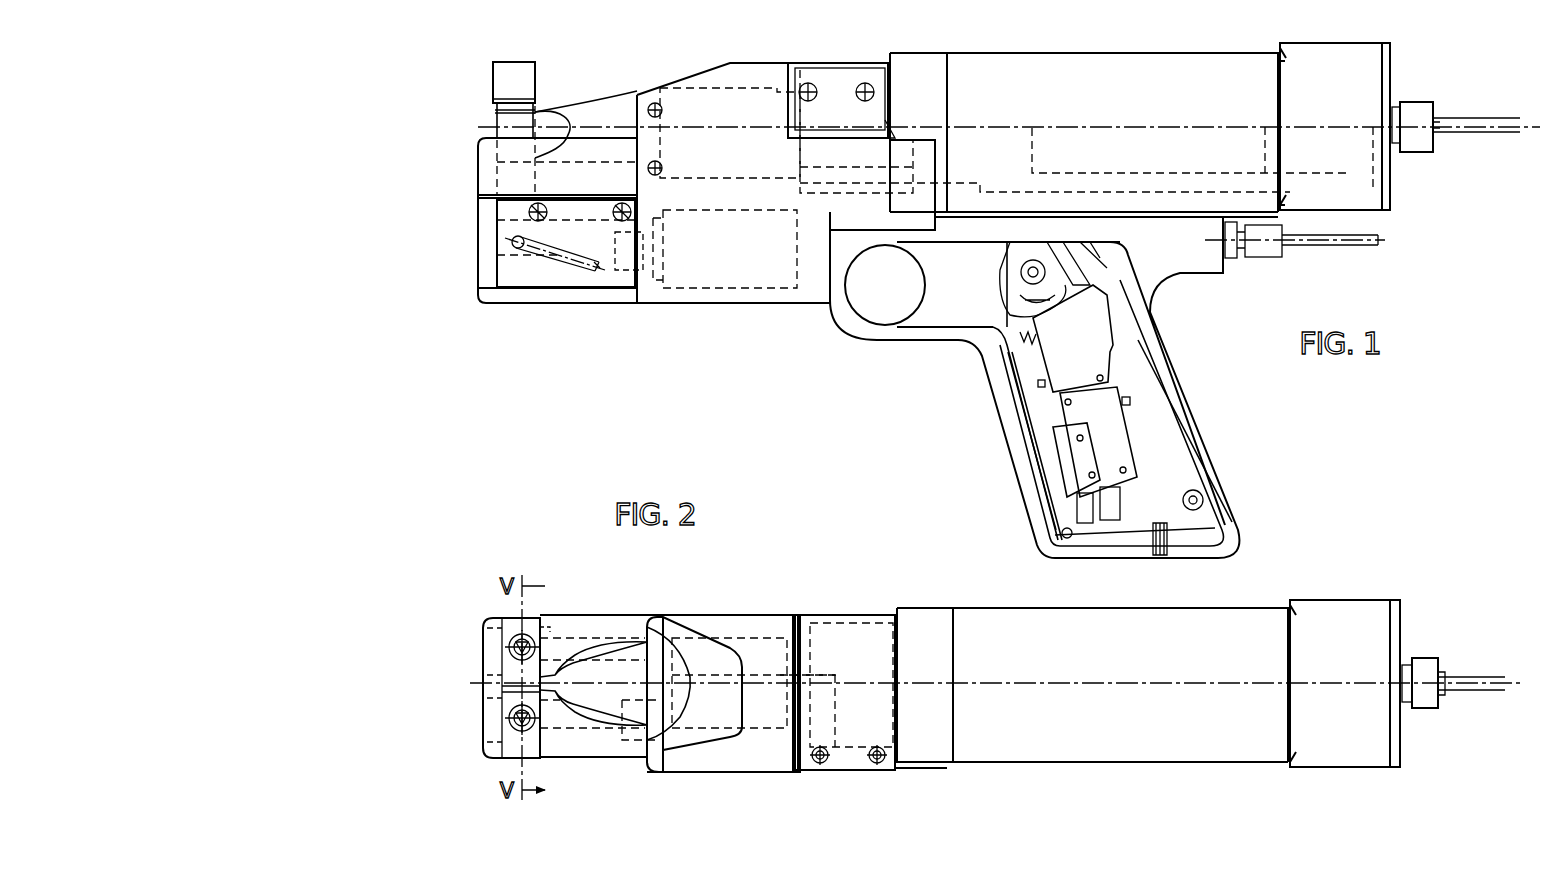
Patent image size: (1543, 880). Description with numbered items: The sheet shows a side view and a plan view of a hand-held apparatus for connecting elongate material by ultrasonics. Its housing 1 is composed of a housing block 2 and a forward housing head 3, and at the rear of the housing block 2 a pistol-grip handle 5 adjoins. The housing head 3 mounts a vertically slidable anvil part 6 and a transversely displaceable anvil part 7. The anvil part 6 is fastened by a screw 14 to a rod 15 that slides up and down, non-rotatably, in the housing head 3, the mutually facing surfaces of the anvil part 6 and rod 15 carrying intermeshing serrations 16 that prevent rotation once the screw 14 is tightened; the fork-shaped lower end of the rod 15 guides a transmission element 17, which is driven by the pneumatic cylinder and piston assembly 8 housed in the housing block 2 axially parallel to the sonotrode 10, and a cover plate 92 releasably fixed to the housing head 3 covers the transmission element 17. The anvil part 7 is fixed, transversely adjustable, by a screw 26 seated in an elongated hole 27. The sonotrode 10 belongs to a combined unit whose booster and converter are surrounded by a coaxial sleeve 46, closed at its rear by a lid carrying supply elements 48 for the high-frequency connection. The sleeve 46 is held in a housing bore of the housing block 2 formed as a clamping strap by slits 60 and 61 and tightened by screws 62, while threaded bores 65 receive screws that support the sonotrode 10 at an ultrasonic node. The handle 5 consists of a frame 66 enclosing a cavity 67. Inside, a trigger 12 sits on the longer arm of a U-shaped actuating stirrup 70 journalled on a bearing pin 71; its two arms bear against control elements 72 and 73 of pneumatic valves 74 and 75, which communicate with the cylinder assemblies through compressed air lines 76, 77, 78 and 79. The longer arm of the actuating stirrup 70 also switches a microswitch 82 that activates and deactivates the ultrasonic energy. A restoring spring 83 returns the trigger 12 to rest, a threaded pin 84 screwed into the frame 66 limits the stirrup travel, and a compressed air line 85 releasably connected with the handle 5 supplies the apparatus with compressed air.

In FIG. 1, the housing 1 is at (660, 306).
In FIG. 2, the housing 1 is at (678, 612).
In FIG. 1, the housing block 2 is at (775, 292).
In FIG. 2, the housing block 2 is at (750, 620).
In FIG. 1, the housing head 3 is at (483, 178).
In FIG. 2, the housing head 3 is at (615, 618).
In FIG. 1, the handle 5 is at (1208, 433).
In FIG. 1, the anvil part 6 is at (540, 72).
In FIG. 2, the anvil part 6 is at (500, 750).
In FIG. 2, the anvil part 7 is at (550, 626).
In FIG. 1, the pneumatic cylinder and piston assembly 8 is at (718, 292).
In FIG. 1, the sonotrode 10 is at (585, 118).
In FIG. 2, the sonotrode 10 is at (593, 683).
In FIG. 1, the trigger 12 is at (920, 280).
In FIG. 2, the screw 14 is at (512, 722).
In FIG. 1, the rod 15 is at (500, 126).
In FIG. 1, the stop plate 16 is at (497, 113).
In FIG. 1, the transmission element 17 is at (494, 268).
In FIG. 2, the screw 26 is at (520, 647).
In FIG. 2, the elongated hole 27 is at (519, 660).
In FIG. 1, the sleeve 46 is at (1092, 52).
In FIG. 2, the sleeve 46 is at (1160, 603).
In FIG. 1, the supply elements 48 is at (1425, 100).
In FIG. 2, the supply elements 48 is at (1428, 655).
In FIG. 1, the slit 60 is at (788, 65).
In FIG. 1, the slit 61 is at (840, 140).
In FIG. 2, the screws 62 is at (870, 763).
In FIG. 1, the threaded bores 65 is at (663, 112).
In FIG. 1, the frame 66 is at (1000, 395).
In FIG. 1, the cavity 67 is at (1160, 352).
In FIG. 1, the actuating stirrup 70 is at (1030, 430).
In FIG. 1, the bearing pin 71 is at (1062, 534).
In FIG. 1, the control element 72 is at (1046, 384).
In FIG. 1, the control element 73 is at (1122, 402).
In FIG. 1, the pneumatic valve 74 is at (1073, 338).
In FIG. 1, the pneumatic valve 75 is at (1098, 442).
In FIG. 1, the compressed air line 76 is at (1072, 260).
In FIG. 1, the compressed air line 77 is at (1062, 305).
In FIG. 1, the compressed air line 78 is at (1076, 505).
In FIG. 1, the compressed air line 79 is at (1110, 495).
In FIG. 1, the microswitch 82 is at (1076, 460).
In FIG. 1, the restoring spring 83 is at (1020, 340).
In FIG. 1, the threaded pin 84 is at (1225, 530).
In FIG. 1, the compressed air line 85 is at (1340, 248).
In FIG. 1, the cover plate 92 is at (483, 240).